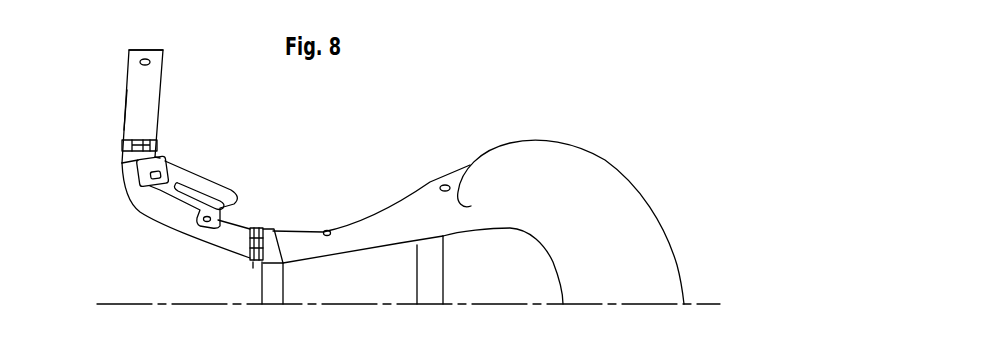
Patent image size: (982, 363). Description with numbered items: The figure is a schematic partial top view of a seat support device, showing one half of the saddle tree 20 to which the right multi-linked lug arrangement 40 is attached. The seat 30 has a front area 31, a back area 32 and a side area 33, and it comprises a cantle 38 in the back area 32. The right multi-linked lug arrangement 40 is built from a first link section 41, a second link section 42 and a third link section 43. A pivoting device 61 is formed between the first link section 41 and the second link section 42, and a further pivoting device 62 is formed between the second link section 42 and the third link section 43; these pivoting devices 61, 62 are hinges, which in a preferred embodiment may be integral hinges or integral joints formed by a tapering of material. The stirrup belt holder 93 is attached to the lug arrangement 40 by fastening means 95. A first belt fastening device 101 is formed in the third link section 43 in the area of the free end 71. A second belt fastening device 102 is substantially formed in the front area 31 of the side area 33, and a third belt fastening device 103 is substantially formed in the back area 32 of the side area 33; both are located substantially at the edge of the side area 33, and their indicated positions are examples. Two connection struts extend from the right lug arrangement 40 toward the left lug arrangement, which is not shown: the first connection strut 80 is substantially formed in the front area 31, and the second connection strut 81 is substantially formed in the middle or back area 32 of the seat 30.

The saddle tree 20 is at (531, 89).
The seat 30 is at (378, 282).
The front area 31 is at (300, 277).
The back area 32 is at (538, 268).
The side area 33 is at (374, 205).
The cantle 38 is at (658, 278).
The right multi-linked lug arrangement 40 is at (81, 133).
The first link section 41 is at (271, 228).
The second link section 42 is at (210, 255).
The third link section 43 is at (147, 105).
The pivoting device 61 is at (256, 226).
The pivoting device 62 is at (124, 122).
The free end 71 is at (128, 65).
The first connection strut 80 is at (270, 287).
The second connection strut 81 is at (433, 284).
The stirrup belt holder 93 is at (229, 150).
The fastening means 95 is at (178, 147).
The first belt fastening device 101 is at (152, 62).
The second belt fastening device 102 is at (327, 229).
The third belt fastening device 103 is at (444, 183).